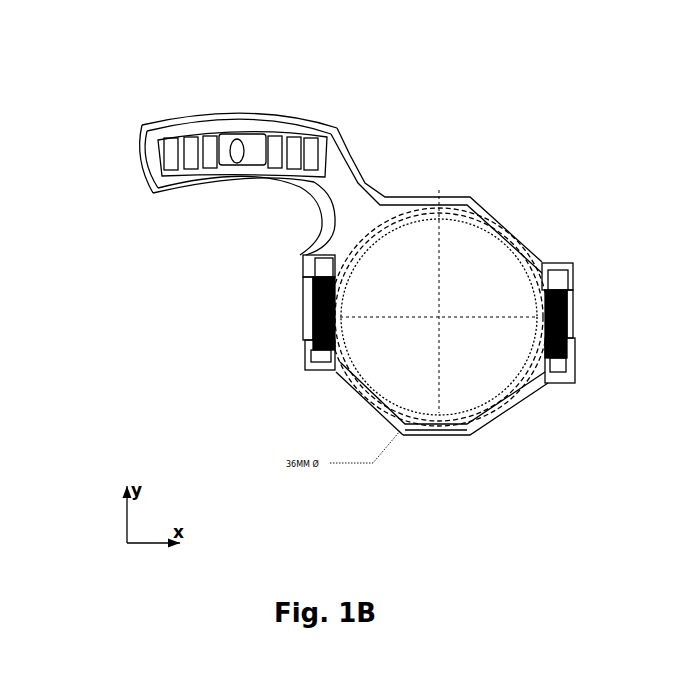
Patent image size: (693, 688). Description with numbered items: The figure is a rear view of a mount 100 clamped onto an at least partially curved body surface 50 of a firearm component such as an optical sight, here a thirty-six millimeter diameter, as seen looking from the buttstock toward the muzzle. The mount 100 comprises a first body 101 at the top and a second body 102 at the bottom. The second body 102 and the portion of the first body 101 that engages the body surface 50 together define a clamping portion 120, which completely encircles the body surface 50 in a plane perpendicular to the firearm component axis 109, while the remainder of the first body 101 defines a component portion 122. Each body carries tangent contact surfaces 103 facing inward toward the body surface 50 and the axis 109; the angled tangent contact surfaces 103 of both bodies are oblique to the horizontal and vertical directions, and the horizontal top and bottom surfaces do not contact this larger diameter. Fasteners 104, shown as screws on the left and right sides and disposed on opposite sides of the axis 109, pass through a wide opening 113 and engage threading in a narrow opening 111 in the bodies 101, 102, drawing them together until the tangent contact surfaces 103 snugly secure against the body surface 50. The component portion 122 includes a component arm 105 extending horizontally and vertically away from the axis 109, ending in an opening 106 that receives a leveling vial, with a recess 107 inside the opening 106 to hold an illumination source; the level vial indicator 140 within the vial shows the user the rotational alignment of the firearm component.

The at least partially curved body surface 50 is at (401, 273).
The mount 100 is at (447, 140).
The first body 101 is at (473, 201).
The second body 102 is at (458, 442).
The tangent contact surface 103 is at (380, 235).
The fastener 104 is at (312, 320).
The component arm 105 is at (318, 200).
The opening 106 is at (152, 163).
The recess 107 is at (262, 134).
The firearm component axis 109 is at (449, 324).
The narrow opening 111 is at (308, 262).
The wide opening 113 is at (305, 349).
The clamping portion 120 is at (292, 391).
The component portion 122 is at (133, 108).
The level vial indicator 140 is at (232, 138).